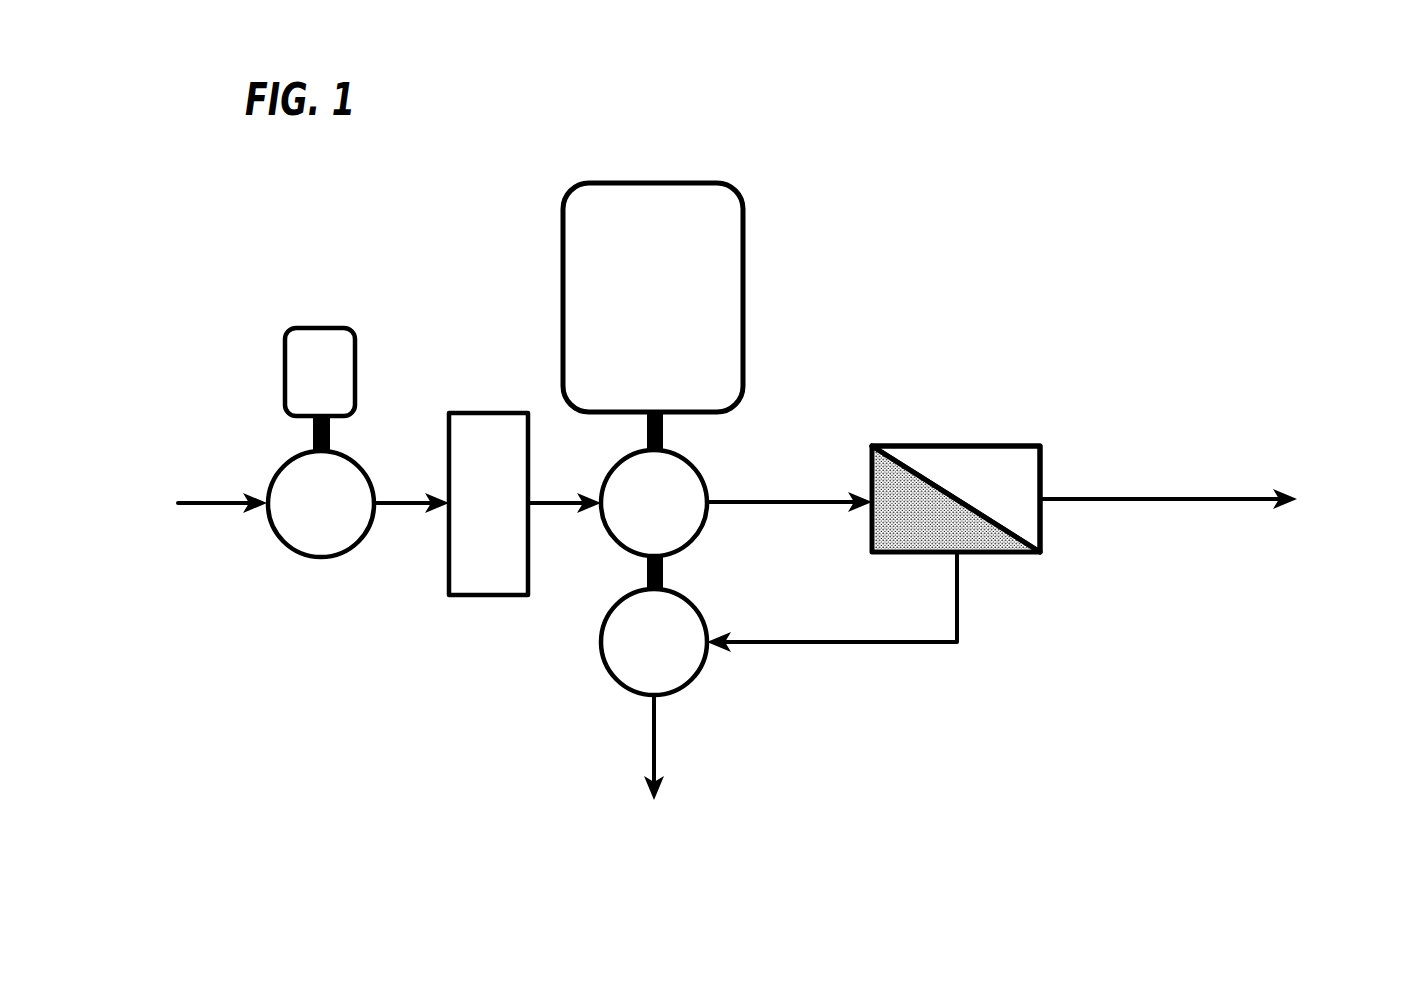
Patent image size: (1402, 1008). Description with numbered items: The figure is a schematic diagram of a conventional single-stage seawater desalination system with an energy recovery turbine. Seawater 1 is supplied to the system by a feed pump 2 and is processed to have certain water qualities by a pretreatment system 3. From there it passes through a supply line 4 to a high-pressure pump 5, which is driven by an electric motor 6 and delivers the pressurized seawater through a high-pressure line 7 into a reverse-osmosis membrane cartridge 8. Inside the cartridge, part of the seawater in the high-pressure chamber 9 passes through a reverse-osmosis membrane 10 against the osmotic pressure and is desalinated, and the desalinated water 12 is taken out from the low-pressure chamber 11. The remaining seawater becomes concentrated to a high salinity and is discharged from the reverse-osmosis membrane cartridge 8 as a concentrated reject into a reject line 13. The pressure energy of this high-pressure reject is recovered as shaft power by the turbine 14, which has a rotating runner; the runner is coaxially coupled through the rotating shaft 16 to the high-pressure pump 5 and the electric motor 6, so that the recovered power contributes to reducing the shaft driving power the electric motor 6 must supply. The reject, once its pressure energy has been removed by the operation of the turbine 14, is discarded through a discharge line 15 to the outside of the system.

The seawater 1 is at (195, 507).
The feed pump 2 is at (317, 558).
The pretreatment system 3 is at (475, 595).
The supply line 4 is at (558, 495).
The high-pressure pump 5 is at (687, 478).
The electric motor 6 is at (722, 257).
The high-pressure line 7 is at (782, 503).
The reverse-osmosis membrane cartridge 8 is at (1040, 443).
The high-pressure chamber 9 is at (963, 532).
The reverse-osmosis membrane 10 is at (1012, 525).
The low-pressure chamber 11 is at (1023, 465).
The desalinated water 12 is at (1198, 476).
The reject line 13 is at (867, 643).
The turbine 14 is at (688, 673).
The discharge line 15 is at (657, 776).
The rotating shaft 16 is at (665, 572).